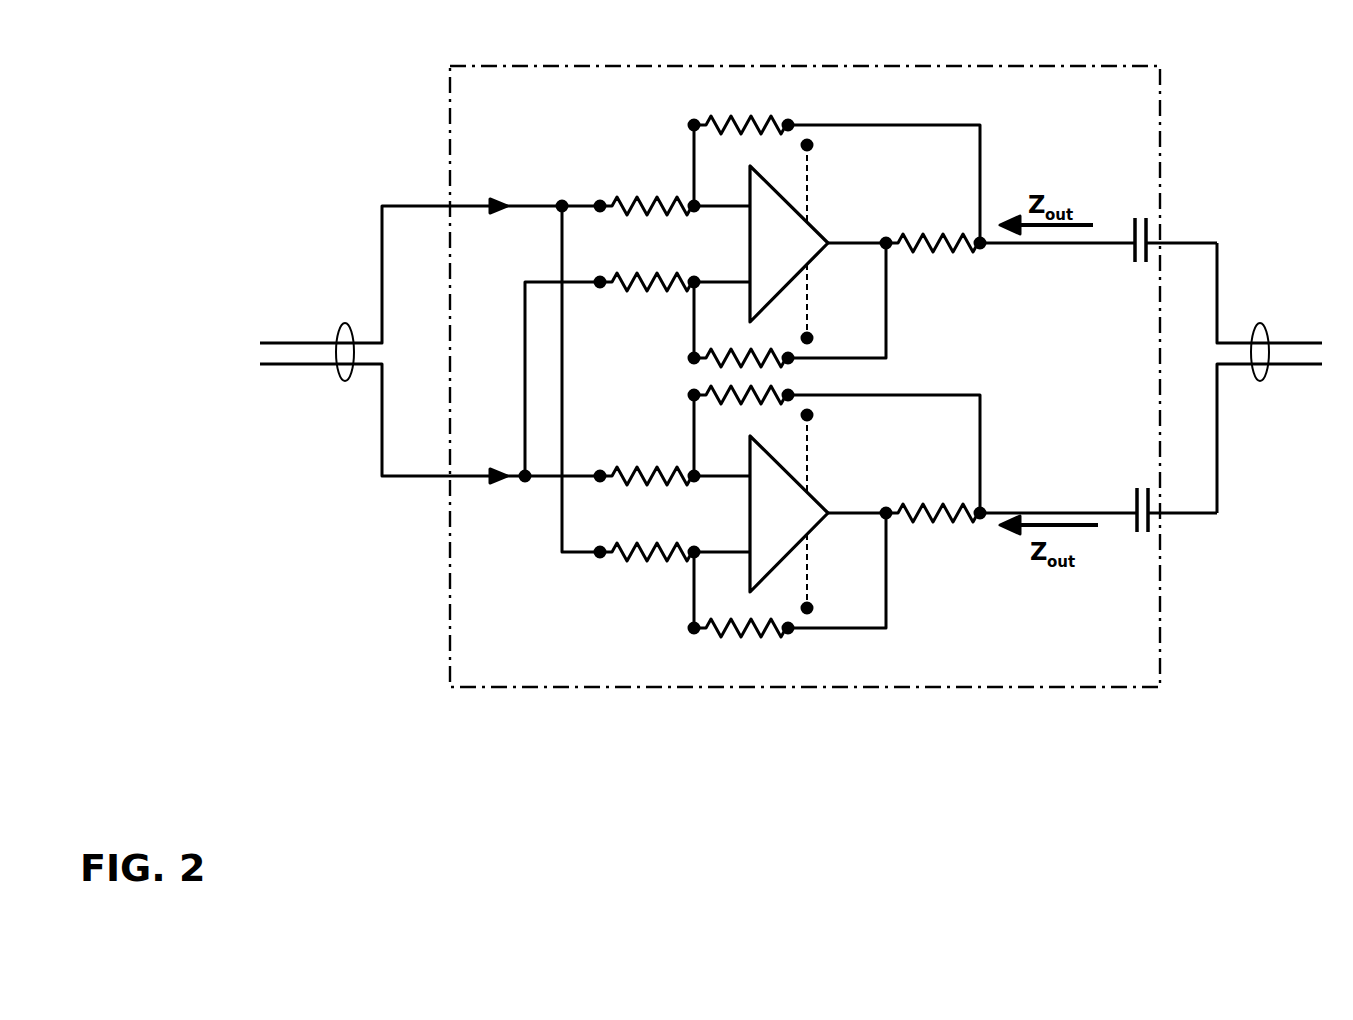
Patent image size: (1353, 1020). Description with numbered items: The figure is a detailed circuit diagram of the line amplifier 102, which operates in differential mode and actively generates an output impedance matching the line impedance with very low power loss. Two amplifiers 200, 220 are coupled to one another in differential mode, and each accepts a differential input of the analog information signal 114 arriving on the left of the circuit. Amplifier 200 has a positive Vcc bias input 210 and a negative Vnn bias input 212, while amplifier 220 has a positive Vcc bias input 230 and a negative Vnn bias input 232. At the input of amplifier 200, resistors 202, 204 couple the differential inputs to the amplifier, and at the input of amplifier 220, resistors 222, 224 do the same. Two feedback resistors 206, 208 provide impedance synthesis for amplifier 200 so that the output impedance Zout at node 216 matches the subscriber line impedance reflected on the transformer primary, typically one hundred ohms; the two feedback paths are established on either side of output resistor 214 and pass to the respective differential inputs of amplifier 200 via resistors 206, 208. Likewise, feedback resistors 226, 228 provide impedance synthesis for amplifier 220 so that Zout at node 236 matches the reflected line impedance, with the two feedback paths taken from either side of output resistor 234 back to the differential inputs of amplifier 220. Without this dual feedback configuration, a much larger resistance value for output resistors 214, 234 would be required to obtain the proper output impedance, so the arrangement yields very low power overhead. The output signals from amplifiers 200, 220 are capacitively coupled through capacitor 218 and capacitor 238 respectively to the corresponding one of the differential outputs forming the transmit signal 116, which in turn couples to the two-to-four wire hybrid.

The line amplifier 102 is at (449, 130).
The analog information signal input 114 is at (344, 324).
The transmit signal 116 is at (1260, 324).
The amplifier 200 is at (766, 266).
The resistor 202 is at (628, 204).
The resistor 204 is at (650, 280).
The feedback resistor 206 is at (724, 122).
The feedback resistor 208 is at (698, 340).
The positive Vcc bias input 210 is at (808, 198).
The negative Vnn bias input 212 is at (809, 292).
The output resistor 214 is at (902, 256).
The node 216 is at (985, 246).
The capacitor 218 is at (1133, 258).
The amplifier 220 is at (766, 536).
The resistor 222 is at (652, 474).
The resistor 224 is at (656, 550).
The feedback resistor 226 is at (692, 398).
The feedback resistor 228 is at (744, 640).
The positive Vcc bias input 230 is at (808, 478).
The negative Vnn bias input 232 is at (809, 560).
The output resistor 234 is at (914, 524).
The node 236 is at (985, 512).
The capacitor 238 is at (1137, 494).